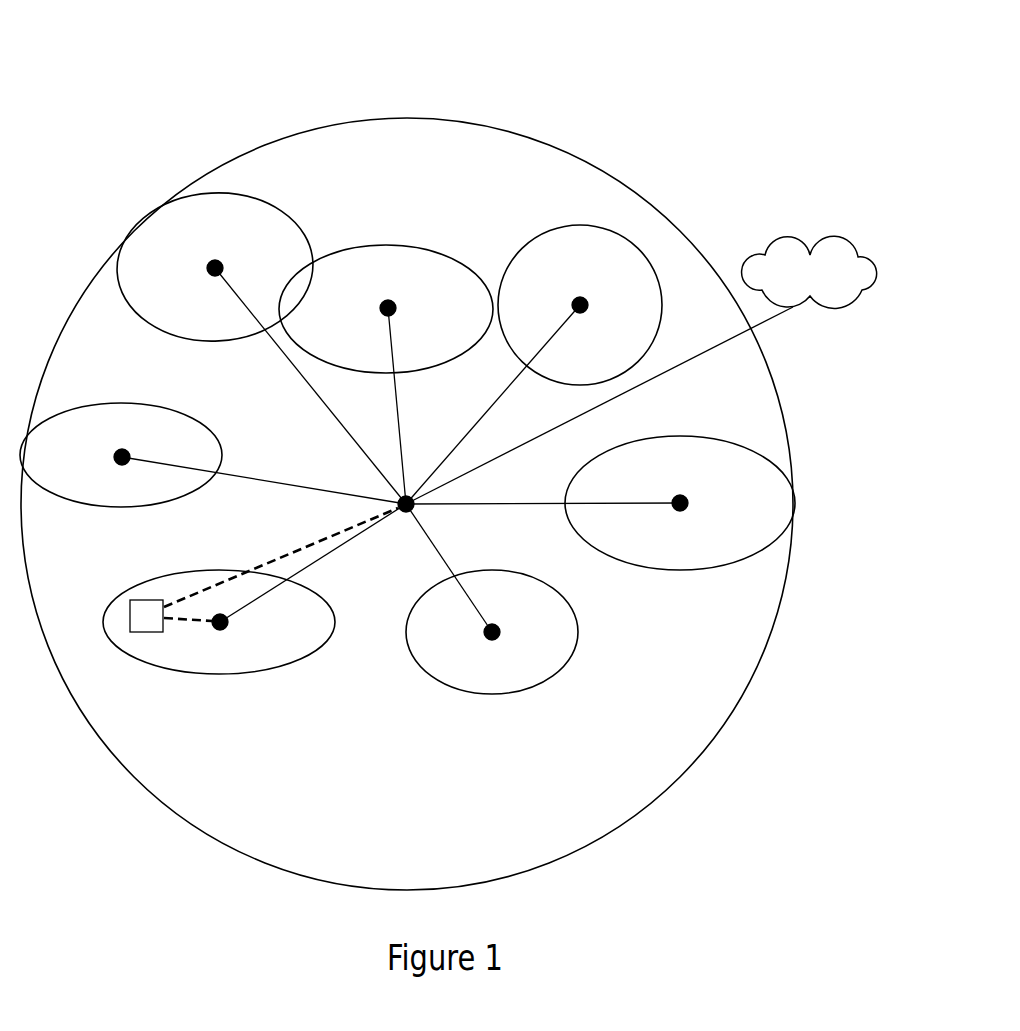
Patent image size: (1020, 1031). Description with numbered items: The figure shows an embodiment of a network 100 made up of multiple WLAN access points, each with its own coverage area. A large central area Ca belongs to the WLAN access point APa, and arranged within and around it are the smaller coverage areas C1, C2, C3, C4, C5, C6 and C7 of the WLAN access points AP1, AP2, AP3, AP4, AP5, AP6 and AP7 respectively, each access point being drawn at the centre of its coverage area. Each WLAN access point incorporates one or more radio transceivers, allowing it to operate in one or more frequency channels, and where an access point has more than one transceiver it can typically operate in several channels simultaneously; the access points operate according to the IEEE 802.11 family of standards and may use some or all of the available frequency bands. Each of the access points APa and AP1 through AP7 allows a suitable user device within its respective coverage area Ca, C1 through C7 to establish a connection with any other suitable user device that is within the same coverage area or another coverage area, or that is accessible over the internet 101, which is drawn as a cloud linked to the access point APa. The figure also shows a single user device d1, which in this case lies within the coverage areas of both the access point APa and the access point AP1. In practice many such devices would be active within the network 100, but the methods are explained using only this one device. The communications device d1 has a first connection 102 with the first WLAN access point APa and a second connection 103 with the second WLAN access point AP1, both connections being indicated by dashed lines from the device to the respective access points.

The network 100 is at (668, 84).
The internet 101 is at (788, 237).
The first connection 102 is at (278, 553).
The second connection 103 is at (176, 622).
The coverage area Ca is at (782, 412).
The coverage area C1 is at (187, 570).
The coverage area C2 is at (500, 570).
The coverage area C3 is at (702, 436).
The coverage area C4 is at (555, 225).
The coverage area C5 is at (410, 245).
The coverage area C6 is at (280, 211).
The coverage area C7 is at (101, 403).
The WLAN access point APa is at (402, 520).
The WLAN access point AP1 is at (238, 635).
The WLAN access point AP2 is at (510, 644).
The WLAN access point AP3 is at (698, 513).
The WLAN access point AP4 is at (599, 299).
The WLAN access point AP5 is at (408, 303).
The WLAN access point AP6 is at (232, 260).
The WLAN access point AP7 is at (140, 448).
The user device d1 is at (146, 616).